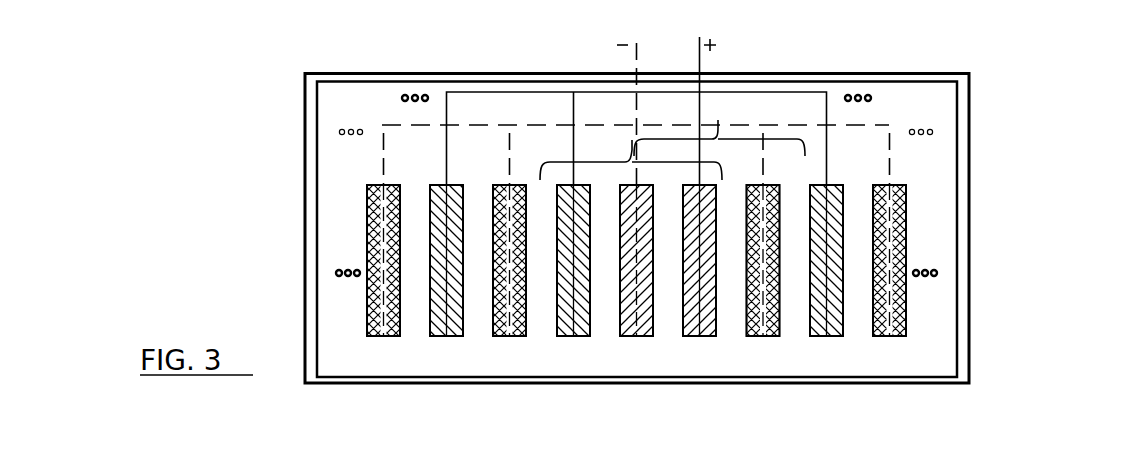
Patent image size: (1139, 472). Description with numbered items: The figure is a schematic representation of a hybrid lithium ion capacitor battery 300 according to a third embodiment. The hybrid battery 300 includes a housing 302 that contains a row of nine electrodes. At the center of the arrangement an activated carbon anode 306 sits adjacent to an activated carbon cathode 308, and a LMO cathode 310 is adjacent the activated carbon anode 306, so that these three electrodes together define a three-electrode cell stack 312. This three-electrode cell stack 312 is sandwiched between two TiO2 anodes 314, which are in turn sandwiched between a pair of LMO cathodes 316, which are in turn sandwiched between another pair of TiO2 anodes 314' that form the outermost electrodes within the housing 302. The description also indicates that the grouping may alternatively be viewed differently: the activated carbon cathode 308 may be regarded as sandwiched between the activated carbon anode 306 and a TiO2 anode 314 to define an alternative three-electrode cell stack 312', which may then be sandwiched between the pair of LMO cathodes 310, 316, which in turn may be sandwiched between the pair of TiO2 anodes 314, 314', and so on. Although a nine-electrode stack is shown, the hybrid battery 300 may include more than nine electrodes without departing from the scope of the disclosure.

The hybrid lithium ion capacitor battery 300 is at (1052, 89).
The housing 302 is at (969, 125).
The activated carbon anode 306 is at (654, 334).
The activated carbon cathode 308 is at (717, 334).
The LMO cathode 310 is at (591, 334).
The 3-electrode cell stack 312 is at (631, 95).
The 3-electrode cell stack 312' is at (723, 94).
The TiO2 anode 314 is at (671, 305).
The TiO2 anode 314' is at (677, 305).
The LMO cathode 316 is at (464, 334).